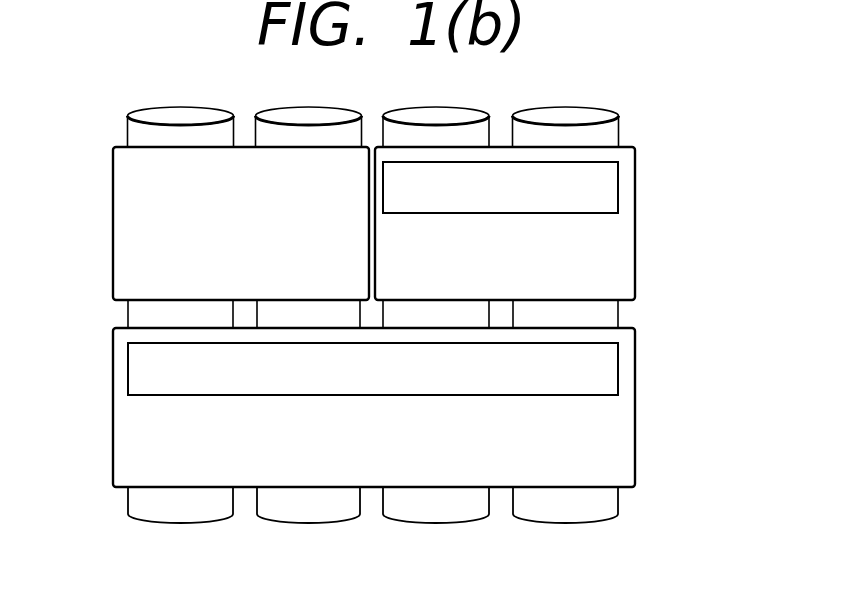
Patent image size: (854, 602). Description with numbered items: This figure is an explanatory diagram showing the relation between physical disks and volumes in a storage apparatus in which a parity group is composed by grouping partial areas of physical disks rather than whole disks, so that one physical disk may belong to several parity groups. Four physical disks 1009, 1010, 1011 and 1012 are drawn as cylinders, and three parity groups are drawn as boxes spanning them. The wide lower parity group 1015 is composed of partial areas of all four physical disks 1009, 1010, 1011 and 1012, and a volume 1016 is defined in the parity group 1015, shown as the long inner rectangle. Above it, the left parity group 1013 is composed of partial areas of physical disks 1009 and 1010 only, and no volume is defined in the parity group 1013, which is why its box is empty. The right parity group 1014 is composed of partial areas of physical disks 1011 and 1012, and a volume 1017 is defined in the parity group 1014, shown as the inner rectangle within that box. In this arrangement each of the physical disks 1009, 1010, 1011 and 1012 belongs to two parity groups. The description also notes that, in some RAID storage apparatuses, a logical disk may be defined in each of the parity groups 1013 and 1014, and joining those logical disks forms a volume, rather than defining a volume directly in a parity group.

The physical disk 1009 is at (163, 523).
The physical disk 1010 is at (288, 523).
The physical disk 1011 is at (413, 523).
The physical disk 1012 is at (542, 523).
The parity group 1013 is at (113, 210).
The parity group 1014 is at (635, 247).
The parity group 1015 is at (635, 422).
The volume 1016 is at (618, 369).
The volume 1017 is at (618, 189).